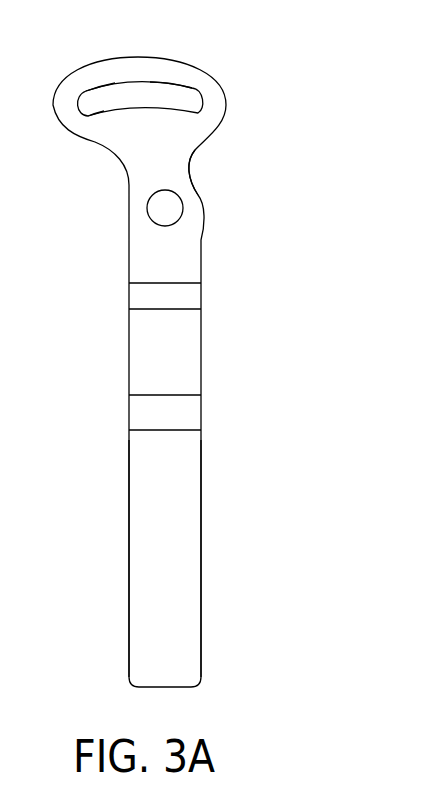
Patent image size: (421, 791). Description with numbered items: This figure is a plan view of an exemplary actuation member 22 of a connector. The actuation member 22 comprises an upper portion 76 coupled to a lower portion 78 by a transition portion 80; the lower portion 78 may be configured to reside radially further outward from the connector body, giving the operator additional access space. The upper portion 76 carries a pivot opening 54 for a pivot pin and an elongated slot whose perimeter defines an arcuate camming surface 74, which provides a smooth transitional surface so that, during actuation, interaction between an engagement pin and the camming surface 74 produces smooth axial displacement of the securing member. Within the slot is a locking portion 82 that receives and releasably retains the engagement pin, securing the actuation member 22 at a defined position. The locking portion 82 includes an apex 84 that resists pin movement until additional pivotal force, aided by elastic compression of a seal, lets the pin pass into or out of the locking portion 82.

The actuation member 22 is at (242, 413).
The pivot opening 54 is at (177, 207).
The camming surface 74 is at (102, 107).
The upper portion 76 is at (195, 193).
The lower portion 78 is at (200, 555).
The transition portion 80 is at (193, 353).
The locking portion 82 is at (195, 97).
The apex 84 is at (180, 88).